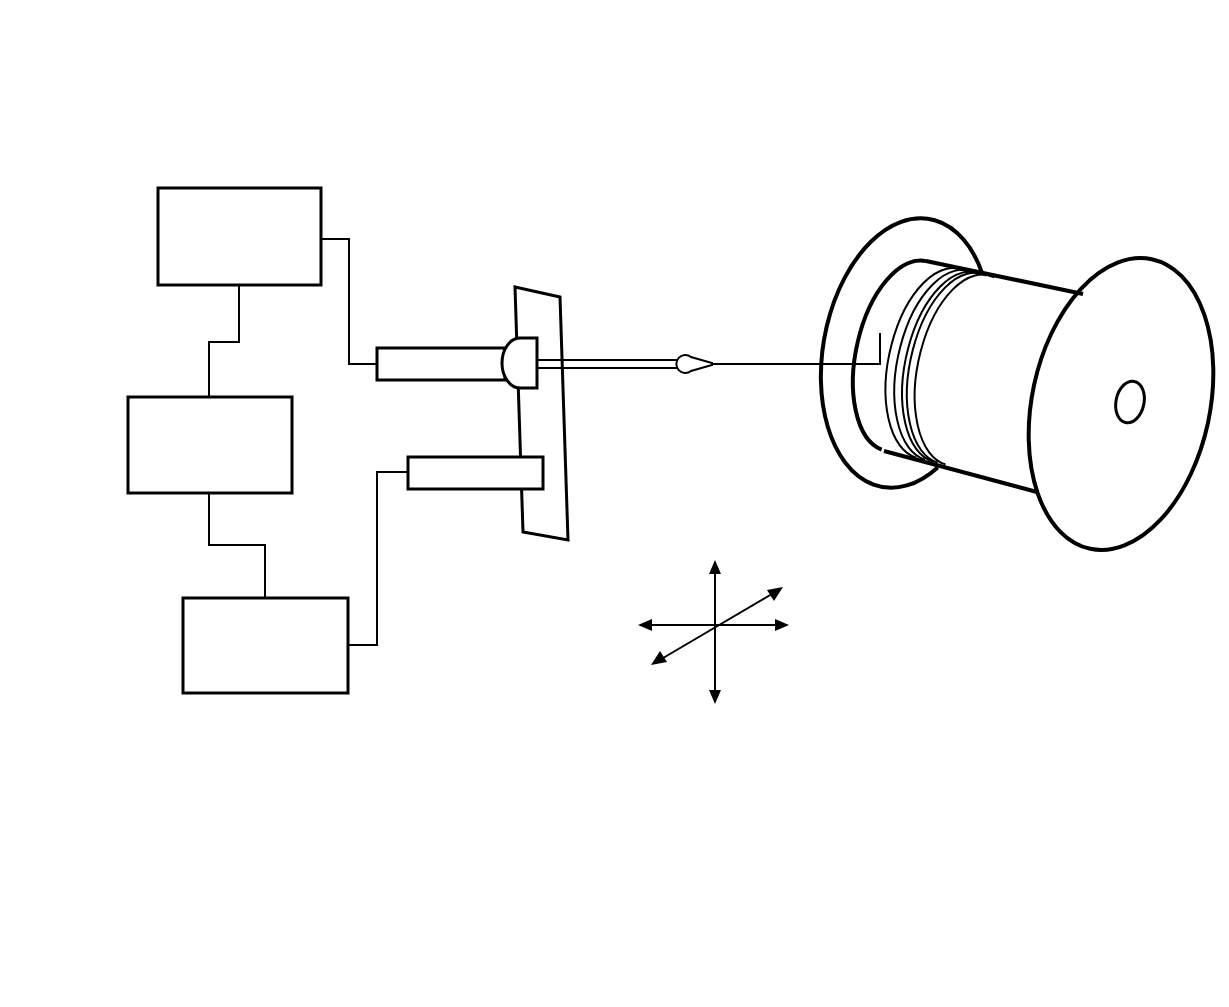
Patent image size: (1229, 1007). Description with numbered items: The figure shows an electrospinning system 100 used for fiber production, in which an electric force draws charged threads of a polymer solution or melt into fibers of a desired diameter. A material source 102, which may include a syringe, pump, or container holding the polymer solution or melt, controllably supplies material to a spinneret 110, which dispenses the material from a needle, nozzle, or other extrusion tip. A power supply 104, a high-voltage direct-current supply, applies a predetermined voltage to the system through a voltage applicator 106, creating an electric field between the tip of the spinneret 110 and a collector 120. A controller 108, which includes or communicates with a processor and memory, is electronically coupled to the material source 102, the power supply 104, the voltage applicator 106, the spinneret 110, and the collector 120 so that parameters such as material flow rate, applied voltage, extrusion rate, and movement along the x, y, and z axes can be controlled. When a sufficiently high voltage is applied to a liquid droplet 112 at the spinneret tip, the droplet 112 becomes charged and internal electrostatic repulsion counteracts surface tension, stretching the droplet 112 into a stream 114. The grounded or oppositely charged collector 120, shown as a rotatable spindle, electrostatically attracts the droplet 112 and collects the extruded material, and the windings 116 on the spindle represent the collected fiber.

The electrospinning system 100 is at (290, 87).
The material source 102 is at (220, 251).
The power supply 104 is at (246, 657).
The voltage applicator 106 is at (457, 489).
The controller 108 is at (191, 457).
The spinneret 110 is at (633, 357).
The liquid droplet 112 is at (693, 355).
The stream 114 is at (760, 357).
The fiber windings 116 is at (918, 290).
The collector 120 is at (1072, 540).